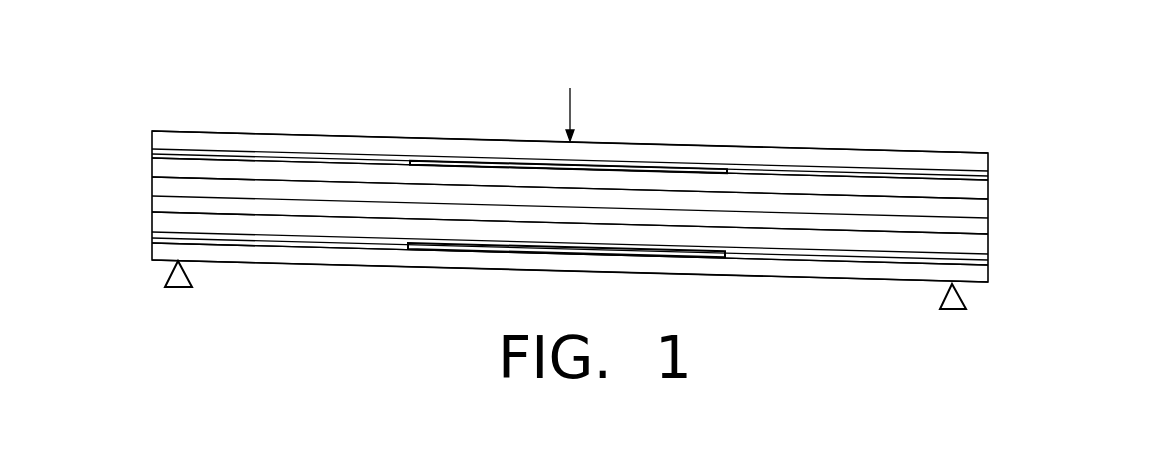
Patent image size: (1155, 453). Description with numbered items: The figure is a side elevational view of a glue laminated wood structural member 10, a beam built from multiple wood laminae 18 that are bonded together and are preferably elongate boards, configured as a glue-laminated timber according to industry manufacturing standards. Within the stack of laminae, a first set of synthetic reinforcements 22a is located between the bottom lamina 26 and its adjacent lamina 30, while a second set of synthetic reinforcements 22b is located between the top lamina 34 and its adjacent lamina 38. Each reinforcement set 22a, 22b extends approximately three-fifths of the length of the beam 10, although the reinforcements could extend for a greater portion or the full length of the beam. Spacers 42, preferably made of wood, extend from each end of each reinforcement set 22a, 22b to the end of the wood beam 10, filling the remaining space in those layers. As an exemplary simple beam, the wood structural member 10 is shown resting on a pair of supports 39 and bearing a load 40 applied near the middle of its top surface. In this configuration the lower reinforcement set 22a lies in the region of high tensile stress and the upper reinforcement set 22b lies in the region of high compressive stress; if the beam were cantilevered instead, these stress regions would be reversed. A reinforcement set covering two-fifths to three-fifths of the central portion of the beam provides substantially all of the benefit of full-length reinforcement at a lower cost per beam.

The glue laminated wood structural member 10 is at (140, 115).
The wood laminae 18 is at (168, 209).
The first set of synthetic reinforcements 22a is at (481, 250).
The second set of synthetic reinforcements 22b is at (447, 158).
The bottom lamina 26 is at (975, 276).
The adjacent lamina 30 is at (967, 247).
The top lamina 34 is at (982, 165).
The adjacent lamina 38 is at (977, 189).
The supports 39 is at (181, 288).
The load 40 is at (571, 104).
The spacers 42 is at (162, 152).